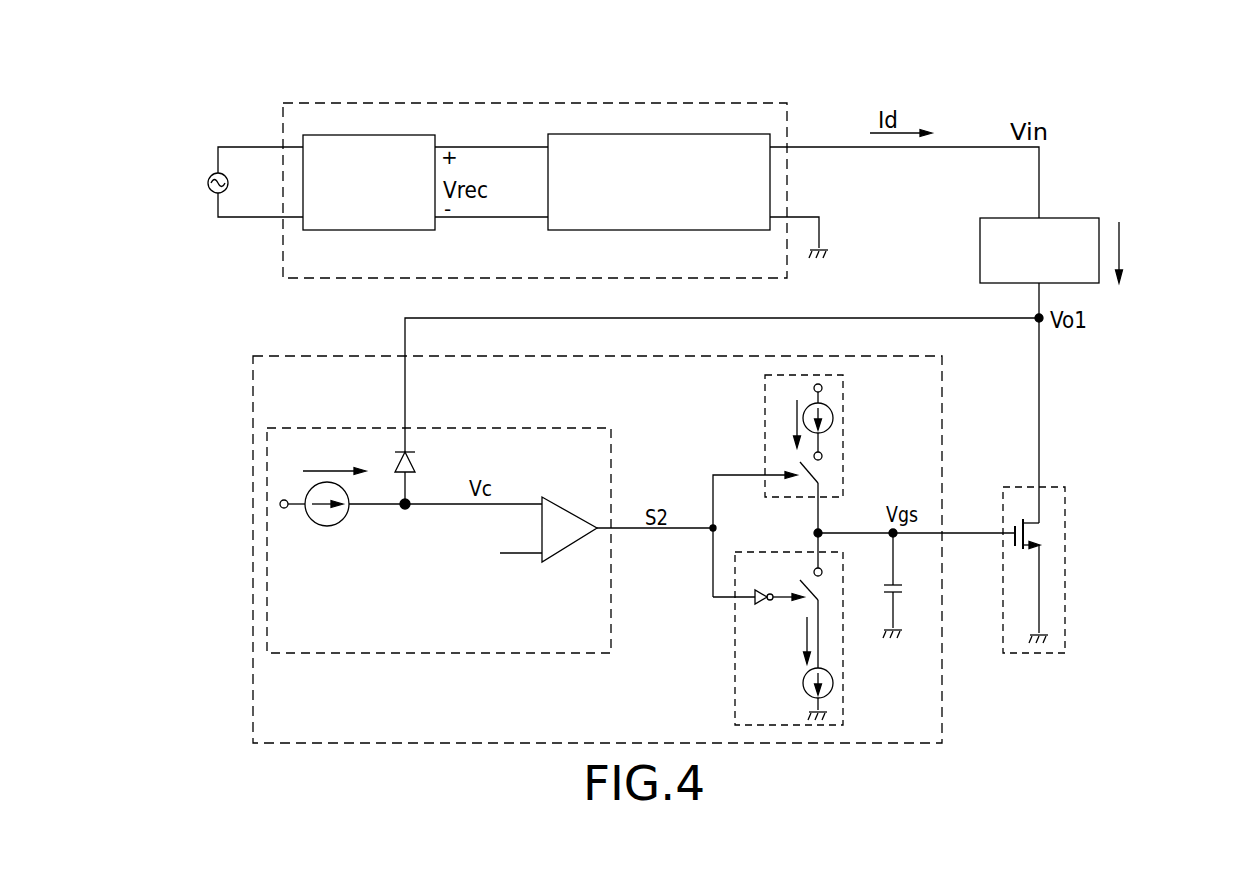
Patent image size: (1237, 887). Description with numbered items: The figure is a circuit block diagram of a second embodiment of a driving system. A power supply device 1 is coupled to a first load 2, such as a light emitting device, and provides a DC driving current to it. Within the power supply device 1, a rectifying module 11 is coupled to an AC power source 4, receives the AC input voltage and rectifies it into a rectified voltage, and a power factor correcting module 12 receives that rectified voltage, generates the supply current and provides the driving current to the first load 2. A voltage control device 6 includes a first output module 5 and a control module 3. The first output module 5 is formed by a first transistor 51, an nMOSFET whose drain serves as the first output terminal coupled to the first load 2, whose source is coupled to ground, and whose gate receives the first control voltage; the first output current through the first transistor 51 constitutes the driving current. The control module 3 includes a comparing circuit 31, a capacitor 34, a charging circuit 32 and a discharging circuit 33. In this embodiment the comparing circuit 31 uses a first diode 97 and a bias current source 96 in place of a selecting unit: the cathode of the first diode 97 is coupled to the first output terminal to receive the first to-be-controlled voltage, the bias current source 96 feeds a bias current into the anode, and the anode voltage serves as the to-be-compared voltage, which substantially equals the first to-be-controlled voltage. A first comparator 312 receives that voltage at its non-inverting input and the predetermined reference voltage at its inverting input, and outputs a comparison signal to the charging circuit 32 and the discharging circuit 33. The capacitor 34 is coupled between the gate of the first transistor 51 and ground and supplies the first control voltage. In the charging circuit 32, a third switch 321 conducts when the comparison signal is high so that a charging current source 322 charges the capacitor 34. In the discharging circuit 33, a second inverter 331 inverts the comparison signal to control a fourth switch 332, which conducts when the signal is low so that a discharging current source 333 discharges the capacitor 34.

The power supply device 1 is at (505, 102).
The rectifying module 11 is at (368, 133).
The power factor correcting module 12 is at (657, 133).
The AC power source 4 is at (208, 182).
The first load 2 is at (1075, 218).
The control module 3 is at (283, 355).
The comparing circuit 31 is at (297, 428).
The bias current source 96 is at (325, 527).
The first diode 97 is at (417, 460).
The first comparator 312 is at (573, 548).
The charging circuit 32 is at (843, 380).
The third switch 321 is at (830, 466).
The charging current source 322 is at (835, 418).
The discharging circuit 33 is at (735, 668).
The second inverter 331 is at (755, 597).
The fourth switch 332 is at (798, 610).
The discharging current source 333 is at (805, 690).
The capacitor 34 is at (900, 600).
The first output module 5 is at (1065, 558).
The first transistor 51 is at (1030, 525).
The voltage control device 6 is at (1102, 697).